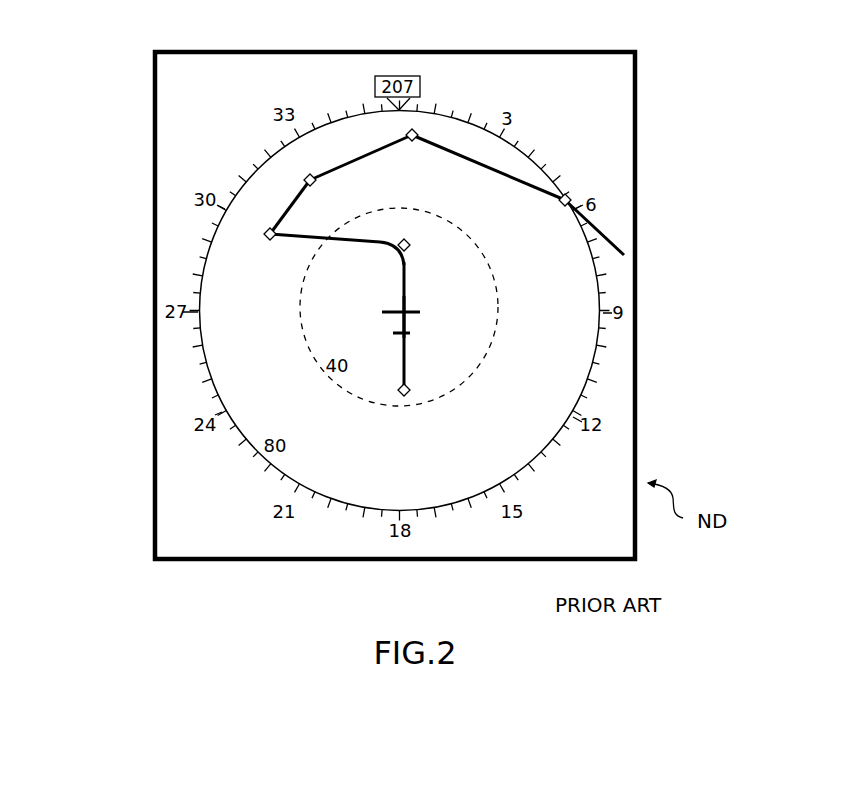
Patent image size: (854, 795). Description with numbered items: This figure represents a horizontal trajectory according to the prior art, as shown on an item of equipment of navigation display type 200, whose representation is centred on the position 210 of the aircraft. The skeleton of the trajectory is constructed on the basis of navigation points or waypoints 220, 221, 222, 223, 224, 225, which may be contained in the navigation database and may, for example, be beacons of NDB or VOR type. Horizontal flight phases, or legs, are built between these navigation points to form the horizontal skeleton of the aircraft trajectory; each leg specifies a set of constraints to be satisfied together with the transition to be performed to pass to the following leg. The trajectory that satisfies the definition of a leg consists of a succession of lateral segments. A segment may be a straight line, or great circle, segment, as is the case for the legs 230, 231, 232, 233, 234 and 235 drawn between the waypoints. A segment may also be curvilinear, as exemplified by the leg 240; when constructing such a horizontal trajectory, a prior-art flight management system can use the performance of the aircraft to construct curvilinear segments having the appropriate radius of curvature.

The navigation display 200 is at (155, 523).
The position of the aircraft 210 is at (410, 306).
The waypoint 220 is at (397, 393).
The waypoint 221 is at (401, 242).
The waypoint 222 is at (268, 234).
The waypoint 223 is at (304, 178).
The waypoint 224 is at (405, 133).
The waypoint 225 is at (570, 196).
The leg 230 is at (406, 352).
The leg 231 is at (307, 243).
The leg 232 is at (287, 208).
The leg 233 is at (360, 157).
The leg 234 is at (505, 177).
The leg 235 is at (597, 230).
The leg 240 is at (398, 257).